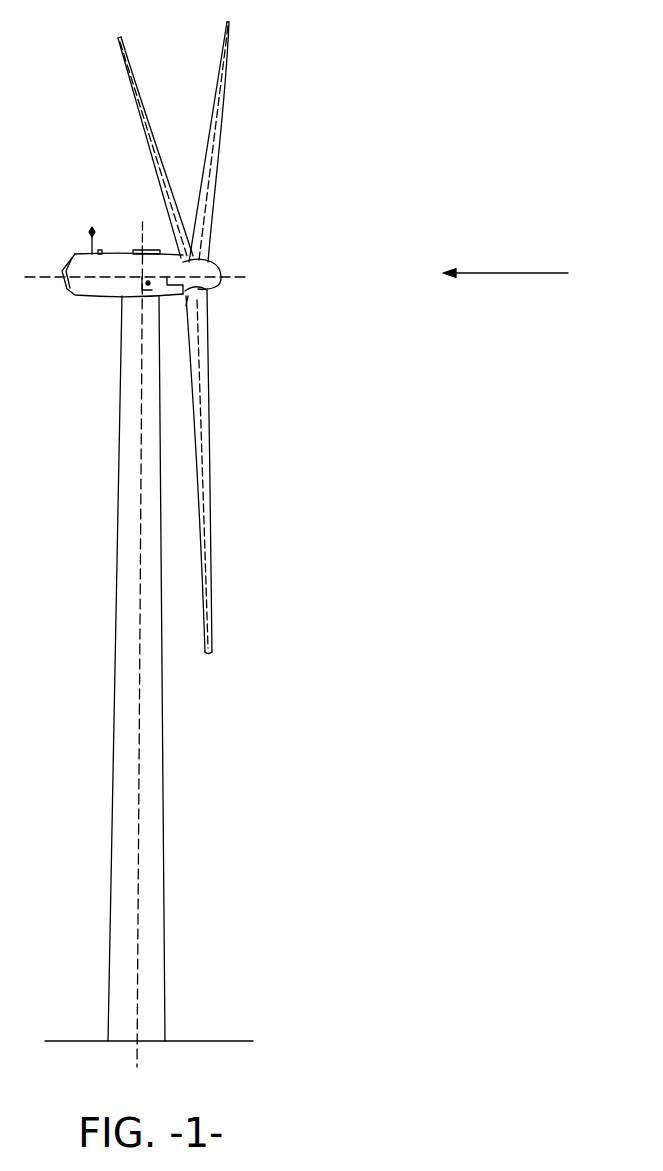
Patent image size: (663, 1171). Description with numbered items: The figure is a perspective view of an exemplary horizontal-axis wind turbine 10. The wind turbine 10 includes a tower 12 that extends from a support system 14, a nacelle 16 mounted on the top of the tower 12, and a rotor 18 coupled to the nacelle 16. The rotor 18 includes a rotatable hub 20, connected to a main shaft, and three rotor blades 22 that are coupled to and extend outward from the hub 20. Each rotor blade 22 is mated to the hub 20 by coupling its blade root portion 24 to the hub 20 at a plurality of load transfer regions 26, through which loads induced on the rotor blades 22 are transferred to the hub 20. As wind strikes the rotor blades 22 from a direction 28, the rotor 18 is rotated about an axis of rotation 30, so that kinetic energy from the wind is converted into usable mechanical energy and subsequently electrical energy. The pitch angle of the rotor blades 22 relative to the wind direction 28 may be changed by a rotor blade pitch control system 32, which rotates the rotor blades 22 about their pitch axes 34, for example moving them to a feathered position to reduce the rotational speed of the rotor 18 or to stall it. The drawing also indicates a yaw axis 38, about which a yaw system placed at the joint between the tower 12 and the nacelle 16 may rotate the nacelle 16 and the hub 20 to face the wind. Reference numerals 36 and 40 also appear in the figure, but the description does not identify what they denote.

The wind turbine 10 is at (360, 101).
The tower 12 is at (150, 724).
The support system 14 is at (90, 1040).
The nacelle 16 is at (95, 290).
The rotor 18 is at (242, 236).
The rotatable hub 20 is at (230, 280).
The rotor blade 22 is at (138, 87).
The blade root portion 24 is at (195, 297).
The load transfer region 26 is at (200, 289).
The direction 28 is at (492, 272).
The axis of rotation 30 is at (217, 277).
The rotor blade pitch control system 32 is at (185, 307).
The pitch axis 34 is at (132, 77).
The yaw drive mechanism 36 is at (147, 288).
The yaw axis 38 is at (140, 632).
The turbine controller 40 is at (142, 222).